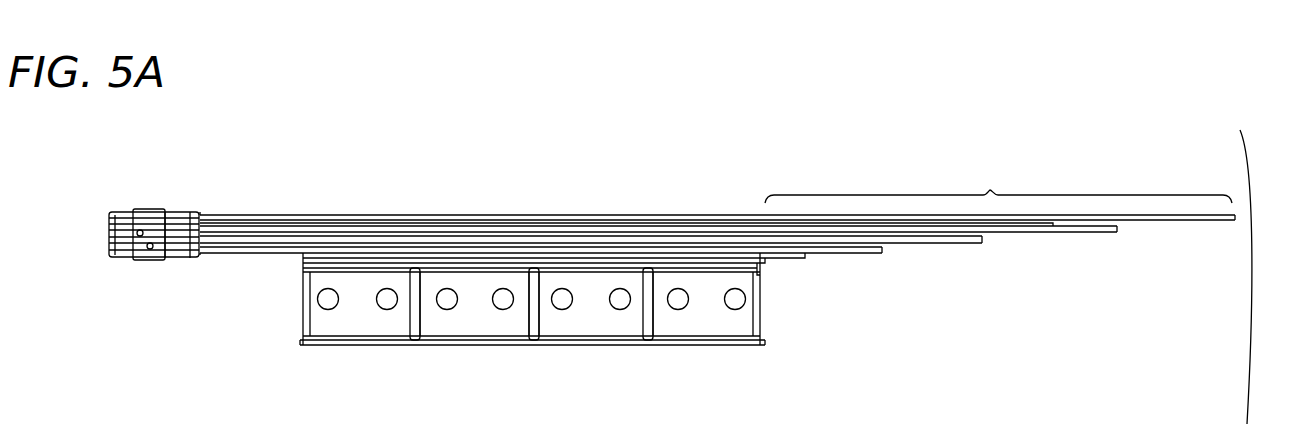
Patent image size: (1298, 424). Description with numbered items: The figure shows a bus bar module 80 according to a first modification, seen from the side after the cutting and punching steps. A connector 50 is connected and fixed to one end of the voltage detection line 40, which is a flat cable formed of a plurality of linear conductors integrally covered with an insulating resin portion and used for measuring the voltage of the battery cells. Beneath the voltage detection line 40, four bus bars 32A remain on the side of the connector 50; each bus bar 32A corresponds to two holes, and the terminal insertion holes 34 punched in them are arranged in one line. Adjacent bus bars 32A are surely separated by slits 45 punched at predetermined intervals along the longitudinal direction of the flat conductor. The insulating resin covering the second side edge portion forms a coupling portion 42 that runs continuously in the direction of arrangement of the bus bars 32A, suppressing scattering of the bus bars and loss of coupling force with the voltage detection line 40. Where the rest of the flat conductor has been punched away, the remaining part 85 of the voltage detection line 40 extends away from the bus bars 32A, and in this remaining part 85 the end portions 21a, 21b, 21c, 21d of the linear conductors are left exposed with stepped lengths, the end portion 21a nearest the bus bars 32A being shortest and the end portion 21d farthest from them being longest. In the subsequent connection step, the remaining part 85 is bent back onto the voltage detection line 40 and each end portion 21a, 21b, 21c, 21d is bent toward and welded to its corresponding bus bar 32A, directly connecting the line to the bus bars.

The connector 50 is at (148, 211).
The voltage detection line 40 is at (717, 223).
The bus bar module 80 is at (717, 223).
The remaining part 85 is at (998, 180).
The end portion 21a is at (850, 255).
The end portion 21b is at (953, 245).
The end portion 21c is at (1077, 233).
The end portion 21d is at (1190, 222).
The coupling portion 42 is at (316, 346).
The terminal insertion holes 34 is at (390, 292).
The slit 45 is at (417, 311).
The bus bar 32A is at (477, 320).